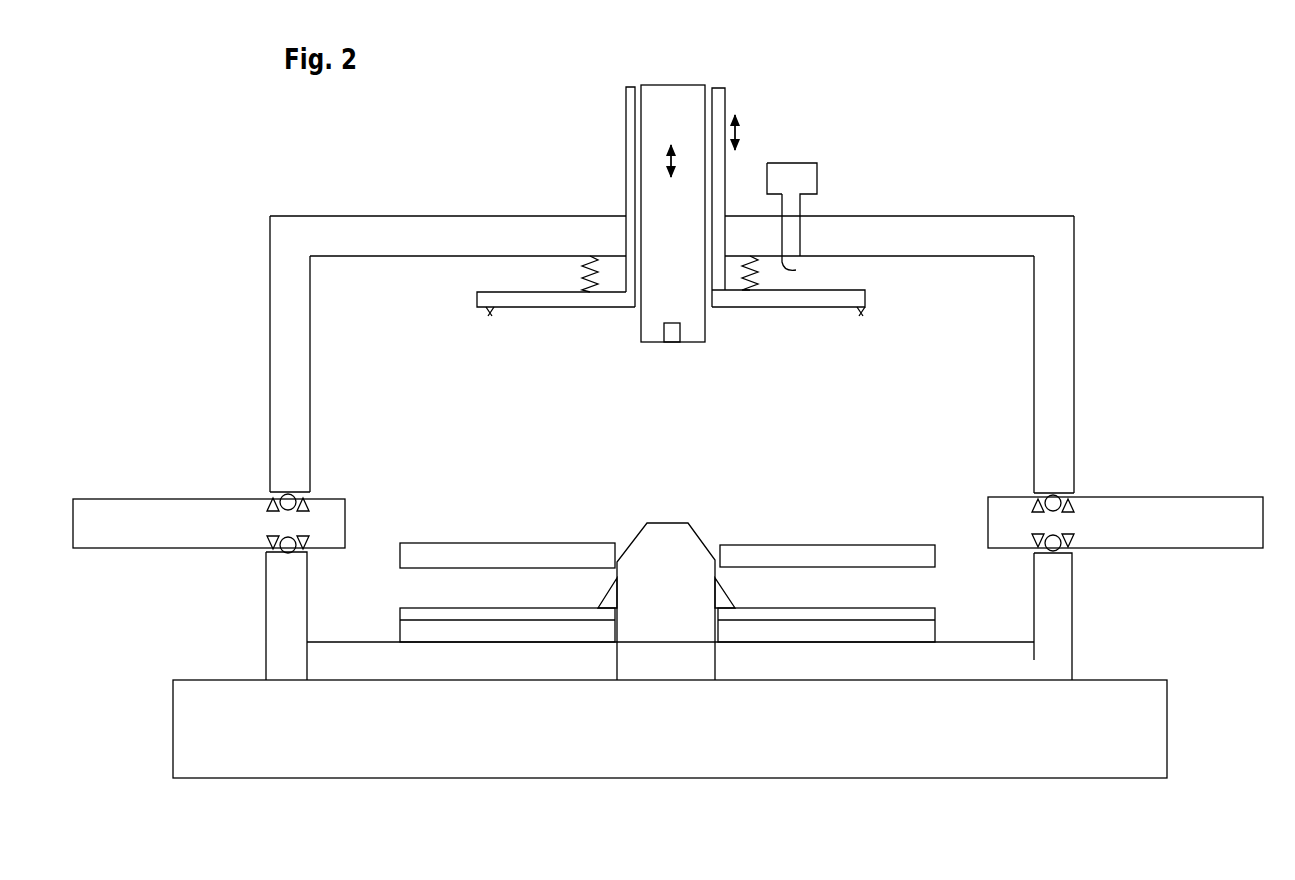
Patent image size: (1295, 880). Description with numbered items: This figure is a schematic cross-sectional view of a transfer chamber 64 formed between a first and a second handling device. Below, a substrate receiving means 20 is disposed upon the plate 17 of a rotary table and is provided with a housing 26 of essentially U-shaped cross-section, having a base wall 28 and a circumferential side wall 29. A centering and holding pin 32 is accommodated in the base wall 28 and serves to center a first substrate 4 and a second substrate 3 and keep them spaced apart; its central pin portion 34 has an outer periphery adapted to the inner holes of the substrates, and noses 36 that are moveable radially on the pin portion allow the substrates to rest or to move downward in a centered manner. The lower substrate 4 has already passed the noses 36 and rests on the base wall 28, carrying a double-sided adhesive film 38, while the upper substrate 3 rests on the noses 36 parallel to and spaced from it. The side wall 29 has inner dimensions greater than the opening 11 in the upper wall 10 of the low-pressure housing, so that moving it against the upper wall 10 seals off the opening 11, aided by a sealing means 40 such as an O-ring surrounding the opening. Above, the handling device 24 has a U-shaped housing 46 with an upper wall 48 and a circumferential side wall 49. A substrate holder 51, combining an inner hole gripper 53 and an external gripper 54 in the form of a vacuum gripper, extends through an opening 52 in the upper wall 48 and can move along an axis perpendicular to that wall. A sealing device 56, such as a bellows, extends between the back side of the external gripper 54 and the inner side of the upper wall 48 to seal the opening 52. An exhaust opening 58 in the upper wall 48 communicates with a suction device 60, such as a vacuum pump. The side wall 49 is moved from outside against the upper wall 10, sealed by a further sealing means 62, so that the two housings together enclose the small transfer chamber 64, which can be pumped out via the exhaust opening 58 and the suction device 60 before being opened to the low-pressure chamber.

The second substrate 3 is at (903, 553).
The first substrate 4 is at (917, 630).
The upper wall 10 is at (1222, 519).
The opening 11 is at (348, 520).
The plate 17 is at (1107, 748).
The substrate receiving means 20 is at (203, 647).
The handling device 24 is at (1024, 128).
The housing 26 is at (1077, 634).
The base wall 28 is at (359, 662).
The side wall 29 is at (1059, 563).
The centering and holding pin 32 is at (704, 529).
The pin portion 34 is at (670, 653).
The noses 36 is at (727, 597).
The double-sided adhesive film 38 is at (503, 585).
The sealing means 40 is at (268, 549).
The housing 46 is at (1080, 283).
The upper wall 48 is at (1010, 245).
The side wall 49 is at (292, 292).
The substrate holder 51 is at (607, 342).
The opening 52 is at (626, 212).
The inner hole gripper 53 is at (690, 328).
The external gripper 54 is at (490, 300).
The sealing device 56 is at (582, 258).
The exhaust opening 58 is at (795, 270).
The suction device 60 is at (790, 183).
The sealing means 62 is at (271, 499).
The transfer chamber 64 is at (497, 482).